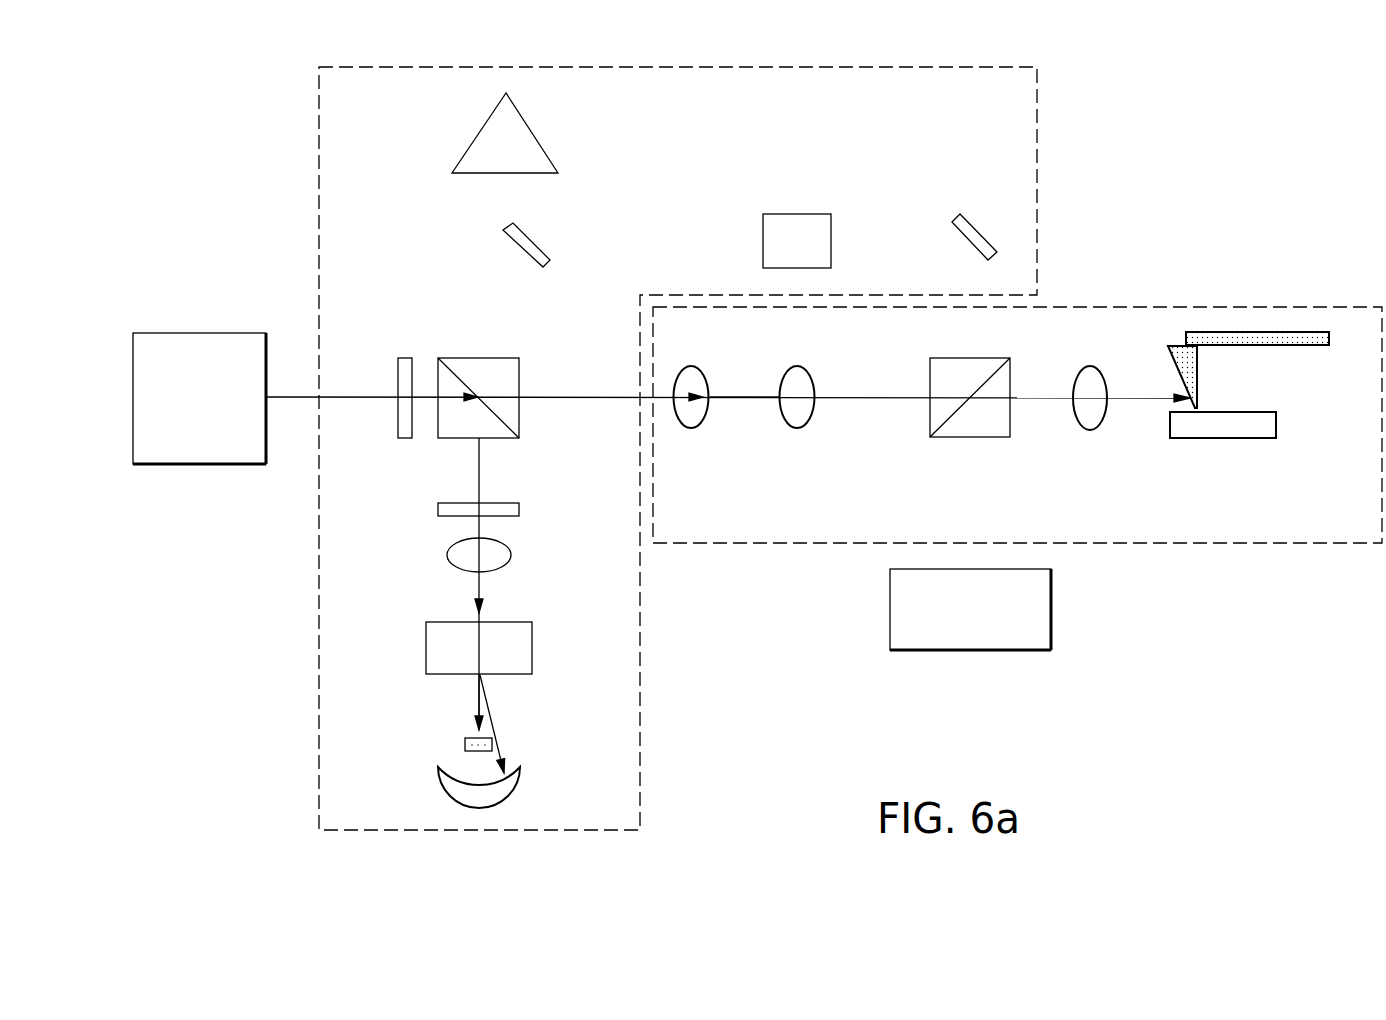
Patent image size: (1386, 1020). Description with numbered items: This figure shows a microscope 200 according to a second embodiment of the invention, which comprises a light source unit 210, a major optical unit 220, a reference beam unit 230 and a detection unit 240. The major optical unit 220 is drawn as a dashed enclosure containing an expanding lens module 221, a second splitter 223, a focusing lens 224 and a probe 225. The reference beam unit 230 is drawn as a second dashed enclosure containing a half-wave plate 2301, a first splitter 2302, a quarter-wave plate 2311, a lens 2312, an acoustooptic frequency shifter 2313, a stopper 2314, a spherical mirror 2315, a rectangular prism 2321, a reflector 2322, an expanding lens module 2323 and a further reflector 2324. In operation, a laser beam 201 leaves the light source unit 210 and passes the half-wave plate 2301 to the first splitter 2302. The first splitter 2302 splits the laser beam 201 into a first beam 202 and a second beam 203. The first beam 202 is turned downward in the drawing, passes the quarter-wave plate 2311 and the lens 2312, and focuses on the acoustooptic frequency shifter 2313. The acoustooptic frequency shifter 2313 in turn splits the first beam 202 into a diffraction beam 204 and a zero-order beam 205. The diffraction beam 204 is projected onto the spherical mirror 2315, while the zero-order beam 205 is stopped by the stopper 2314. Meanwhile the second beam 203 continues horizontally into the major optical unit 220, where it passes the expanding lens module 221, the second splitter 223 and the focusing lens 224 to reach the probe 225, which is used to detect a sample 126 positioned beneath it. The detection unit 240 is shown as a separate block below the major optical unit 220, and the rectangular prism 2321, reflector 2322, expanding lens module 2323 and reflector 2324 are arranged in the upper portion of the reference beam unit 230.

The microscope 200 is at (221, 93).
The light source unit 210 is at (220, 412).
The laser beam 201 is at (357, 395).
The half-wave plate 2301 is at (403, 357).
The first splitter 2302 is at (520, 372).
The first beam 202 is at (481, 463).
The quarter-wave plate 2311 is at (520, 510).
The lens 2312 is at (511, 555).
The acoustooptic frequency shifter 2313 is at (533, 647).
The zero-order beam 205 is at (478, 700).
The diffraction beam 204 is at (490, 723).
The stopper 2314 is at (464, 743).
The spherical mirror 2315 is at (520, 790).
The rectangular prism 2321 is at (490, 115).
The reflector 2322 is at (548, 267).
The expanding lens module 2323 is at (797, 214).
The reflector 2324 is at (982, 232).
The reference beam unit 230 is at (1037, 180).
The major optical unit 220 is at (1277, 307).
The second beam 203 is at (743, 396).
The expanding lens module 221 is at (797, 428).
The second splitter 223 is at (970, 440).
The focusing lens 224 is at (1090, 430).
The probe 225 is at (1196, 375).
The sample 126 is at (1267, 428).
The detection unit 240 is at (991, 625).